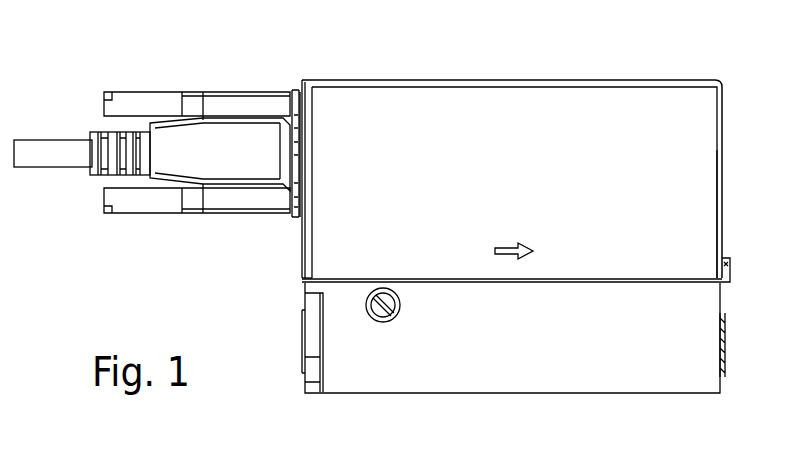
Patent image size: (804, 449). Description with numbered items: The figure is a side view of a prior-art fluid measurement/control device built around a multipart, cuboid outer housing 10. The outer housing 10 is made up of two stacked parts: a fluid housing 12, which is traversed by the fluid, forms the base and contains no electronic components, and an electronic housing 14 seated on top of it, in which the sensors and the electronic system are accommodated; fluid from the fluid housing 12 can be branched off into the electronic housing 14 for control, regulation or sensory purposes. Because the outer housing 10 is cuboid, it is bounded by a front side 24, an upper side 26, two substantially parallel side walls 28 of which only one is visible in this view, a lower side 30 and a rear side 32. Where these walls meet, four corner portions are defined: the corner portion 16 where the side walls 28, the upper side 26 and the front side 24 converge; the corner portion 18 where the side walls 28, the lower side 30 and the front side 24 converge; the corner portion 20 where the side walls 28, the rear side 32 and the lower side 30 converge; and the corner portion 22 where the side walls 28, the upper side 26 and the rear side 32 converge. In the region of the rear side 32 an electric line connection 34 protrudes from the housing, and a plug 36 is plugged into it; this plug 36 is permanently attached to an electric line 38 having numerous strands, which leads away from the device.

The outer housing 10 is at (546, 152).
The fluid housing 12 is at (526, 364).
The electronic housing 14 is at (633, 225).
The corner portion 16 is at (546, 152).
The corner portion 18 is at (720, 402).
The corner portion 20 is at (306, 400).
The corner portion 22 is at (300, 70).
The front side 24 is at (735, 139).
The upper side 26 is at (557, 75).
The side walls 28 is at (703, 165).
The lower side 30 is at (518, 397).
The rear side 32 is at (302, 281).
The electric line connection 34 is at (302, 155).
The plug 36 is at (218, 128).
The electric line 38 is at (65, 147).